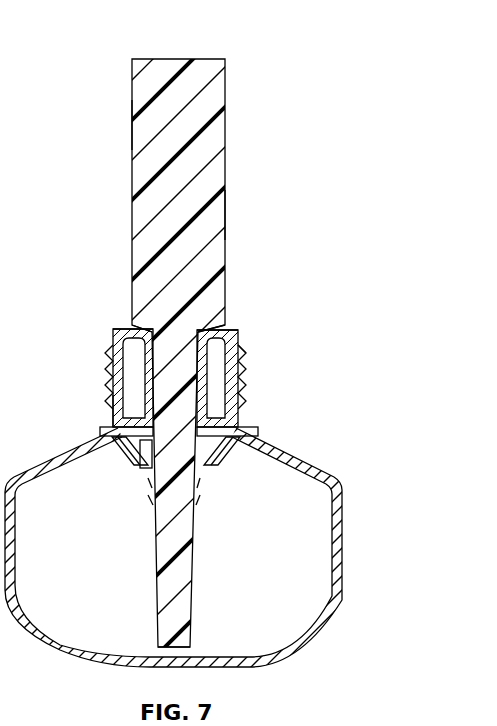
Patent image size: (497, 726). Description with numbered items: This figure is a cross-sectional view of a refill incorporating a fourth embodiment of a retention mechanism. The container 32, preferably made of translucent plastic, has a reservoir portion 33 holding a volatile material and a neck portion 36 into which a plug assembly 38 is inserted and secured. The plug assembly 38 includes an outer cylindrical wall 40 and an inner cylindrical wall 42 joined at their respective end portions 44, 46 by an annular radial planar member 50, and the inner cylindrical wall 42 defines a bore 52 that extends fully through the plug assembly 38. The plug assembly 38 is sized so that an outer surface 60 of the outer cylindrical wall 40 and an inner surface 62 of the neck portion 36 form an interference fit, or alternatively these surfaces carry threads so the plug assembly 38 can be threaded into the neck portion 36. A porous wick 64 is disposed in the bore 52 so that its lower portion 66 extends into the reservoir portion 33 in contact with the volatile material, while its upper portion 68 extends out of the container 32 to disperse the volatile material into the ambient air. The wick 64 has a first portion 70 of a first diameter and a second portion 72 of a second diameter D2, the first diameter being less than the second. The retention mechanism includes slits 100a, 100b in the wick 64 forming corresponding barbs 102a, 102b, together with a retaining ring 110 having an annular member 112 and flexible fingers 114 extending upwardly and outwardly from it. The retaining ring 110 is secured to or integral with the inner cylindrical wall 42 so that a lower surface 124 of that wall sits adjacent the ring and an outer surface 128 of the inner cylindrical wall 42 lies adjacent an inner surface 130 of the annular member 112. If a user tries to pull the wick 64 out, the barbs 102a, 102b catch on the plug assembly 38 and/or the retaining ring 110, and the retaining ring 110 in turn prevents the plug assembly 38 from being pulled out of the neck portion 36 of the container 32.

The rod diameter D2 is at (233, 328).
The container 32 is at (307, 458).
The reservoir portion 33 is at (317, 602).
The neck portion 36 is at (246, 380).
The plug assembly 38 is at (113, 362).
The outer cylindrical wall 40 is at (240, 395).
The inner cylindrical wall 42 is at (243, 360).
The end portion 44 is at (238, 333).
The end portion 46 is at (225, 326).
The annular radial planar member 50 is at (130, 326).
The bore 52 is at (238, 420).
The outer surface 60 is at (113, 340).
The inner surface 62 is at (113, 415).
The porous wick 64 is at (213, 135).
The lower portion 66 is at (180, 617).
The upper portion 68 is at (135, 128).
The first portion 70 is at (187, 565).
The second portion 72 is at (210, 215).
The slit 100a is at (152, 483).
The slit 100b is at (200, 478).
The barb 102a is at (152, 500).
The barb 102b is at (200, 495).
The retaining ring 110 is at (143, 473).
The annular member 112 is at (253, 457).
The flexible fingers 114 is at (115, 450).
The lower surface 124 is at (133, 460).
The outer surface 128 is at (108, 428).
The inner surface 130 is at (110, 385).